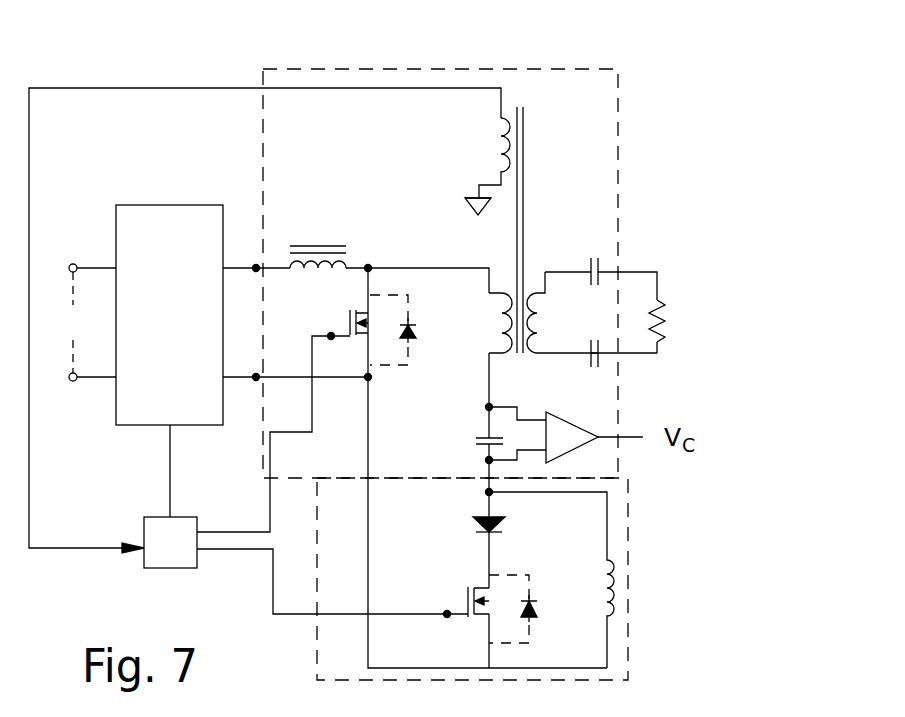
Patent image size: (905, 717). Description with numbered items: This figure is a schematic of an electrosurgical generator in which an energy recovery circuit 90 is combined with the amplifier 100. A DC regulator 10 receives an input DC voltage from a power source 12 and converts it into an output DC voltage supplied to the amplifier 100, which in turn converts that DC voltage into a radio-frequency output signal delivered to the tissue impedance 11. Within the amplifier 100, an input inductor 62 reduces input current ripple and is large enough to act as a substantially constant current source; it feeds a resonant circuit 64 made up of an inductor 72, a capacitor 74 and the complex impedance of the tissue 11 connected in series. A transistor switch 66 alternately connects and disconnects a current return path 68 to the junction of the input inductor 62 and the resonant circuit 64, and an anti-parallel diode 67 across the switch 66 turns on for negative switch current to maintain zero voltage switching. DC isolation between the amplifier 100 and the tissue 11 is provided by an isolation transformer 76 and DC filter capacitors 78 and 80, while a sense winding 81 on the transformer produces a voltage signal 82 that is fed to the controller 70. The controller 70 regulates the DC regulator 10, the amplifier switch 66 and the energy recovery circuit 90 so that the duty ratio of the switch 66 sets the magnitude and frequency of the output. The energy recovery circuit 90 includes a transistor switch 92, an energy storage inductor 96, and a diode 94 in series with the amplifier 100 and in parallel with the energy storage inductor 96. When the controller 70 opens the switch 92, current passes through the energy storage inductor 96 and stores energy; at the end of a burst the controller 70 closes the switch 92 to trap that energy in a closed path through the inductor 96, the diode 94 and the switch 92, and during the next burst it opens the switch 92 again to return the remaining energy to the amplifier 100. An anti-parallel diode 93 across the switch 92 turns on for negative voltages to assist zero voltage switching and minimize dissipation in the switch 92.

The DC regulator 10 is at (169, 315).
The tissue impedance 11 is at (658, 303).
The power source 12 is at (87, 322).
The input inductor 62 is at (340, 271).
The resonant circuit 64 is at (496, 331).
The transistor switch 66 is at (348, 323).
The anti-parallel diode 67 is at (414, 330).
The current return path 68 is at (337, 380).
The controller 70 is at (170, 542).
The inductor 72 is at (500, 315).
The capacitor 74 is at (483, 447).
The isolation transformer 76 is at (537, 361).
The DC filter capacitor 78 is at (590, 278).
The DC filter capacitor 80 is at (592, 349).
The sense winding 81 is at (485, 166).
The voltage signal 82 is at (265, 303).
The energy recovery circuit 90 is at (640, 608).
The transistor switch 92 is at (466, 603).
The anti-parallel diode 93 is at (540, 612).
The diode 94 is at (472, 525).
The energy storage inductor 96 is at (606, 584).
The amplifier 100 is at (400, 62).